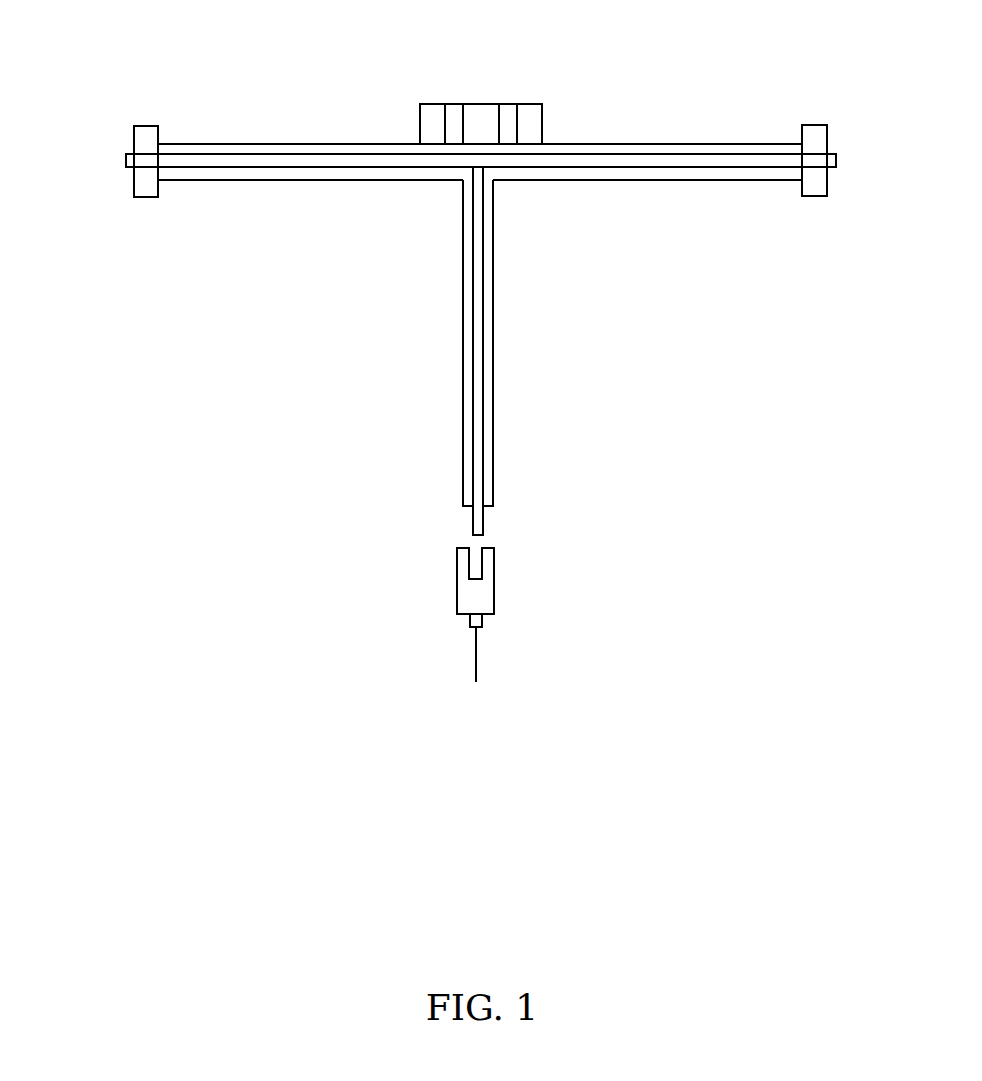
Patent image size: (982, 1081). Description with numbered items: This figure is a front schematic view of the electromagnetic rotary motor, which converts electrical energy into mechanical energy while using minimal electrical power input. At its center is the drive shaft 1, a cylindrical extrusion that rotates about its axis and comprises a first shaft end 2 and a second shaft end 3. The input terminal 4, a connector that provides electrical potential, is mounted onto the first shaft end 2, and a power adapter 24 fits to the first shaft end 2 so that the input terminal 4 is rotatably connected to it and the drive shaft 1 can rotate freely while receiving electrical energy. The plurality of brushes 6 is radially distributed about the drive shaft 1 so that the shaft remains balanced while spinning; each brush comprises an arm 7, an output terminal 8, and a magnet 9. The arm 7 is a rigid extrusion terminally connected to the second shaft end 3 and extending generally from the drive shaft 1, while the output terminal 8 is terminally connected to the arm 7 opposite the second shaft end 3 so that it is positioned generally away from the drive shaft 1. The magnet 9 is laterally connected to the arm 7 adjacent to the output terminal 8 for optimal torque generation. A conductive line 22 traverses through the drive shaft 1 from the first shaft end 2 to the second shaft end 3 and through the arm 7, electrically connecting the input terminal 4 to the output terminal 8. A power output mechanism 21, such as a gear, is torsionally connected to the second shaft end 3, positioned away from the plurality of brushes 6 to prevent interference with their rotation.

The drive shaft 1 is at (410, 330).
The first shaft end 2 is at (467, 492).
The second shaft end 3 is at (488, 194).
The input terminal 4 is at (477, 523).
The plurality of brushes 6 is at (288, 120).
The arm 7 is at (194, 152).
The output terminal 8 is at (480, 138).
The magnet 9 is at (145, 145).
The power output mechanism 21 is at (477, 112).
The conductive line 22 is at (479, 355).
The power adapter 24 is at (487, 595).